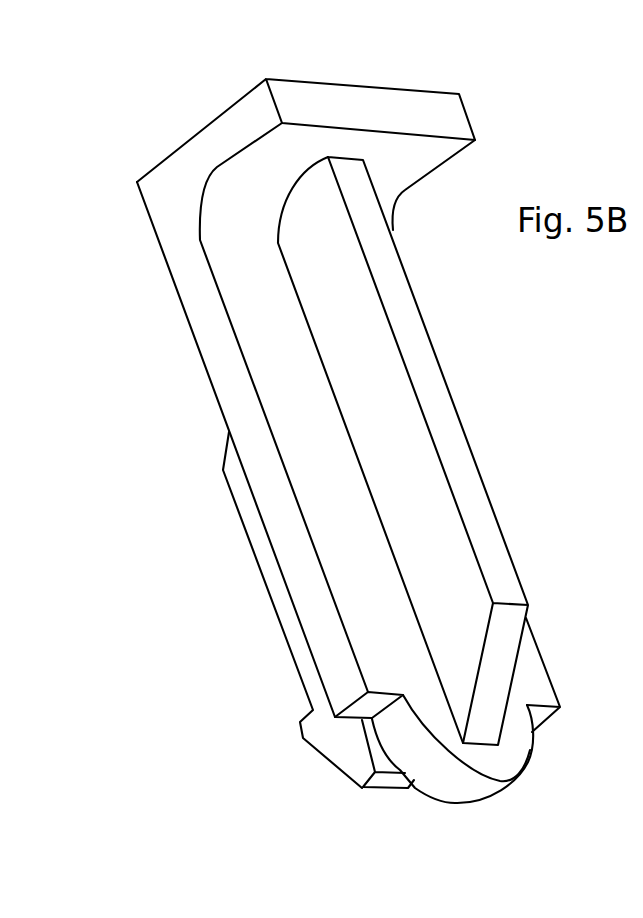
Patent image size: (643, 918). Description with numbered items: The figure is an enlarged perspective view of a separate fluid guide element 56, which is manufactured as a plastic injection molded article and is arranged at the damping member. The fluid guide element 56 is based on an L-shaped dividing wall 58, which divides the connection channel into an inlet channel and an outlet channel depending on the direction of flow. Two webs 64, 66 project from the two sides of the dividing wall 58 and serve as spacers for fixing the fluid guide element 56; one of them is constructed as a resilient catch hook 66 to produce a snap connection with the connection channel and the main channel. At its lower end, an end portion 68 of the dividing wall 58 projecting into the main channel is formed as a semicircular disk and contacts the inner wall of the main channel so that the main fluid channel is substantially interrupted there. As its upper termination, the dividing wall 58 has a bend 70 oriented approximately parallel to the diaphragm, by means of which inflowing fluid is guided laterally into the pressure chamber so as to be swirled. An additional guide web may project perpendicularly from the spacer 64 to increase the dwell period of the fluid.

The fluid guide element 56 is at (0, 387).
The dividing wall 58 is at (207, 330).
The web 64 is at (405, 432).
The resilient catch hook 66 is at (267, 563).
The end portion 68 is at (505, 760).
The bend 70 is at (218, 155).